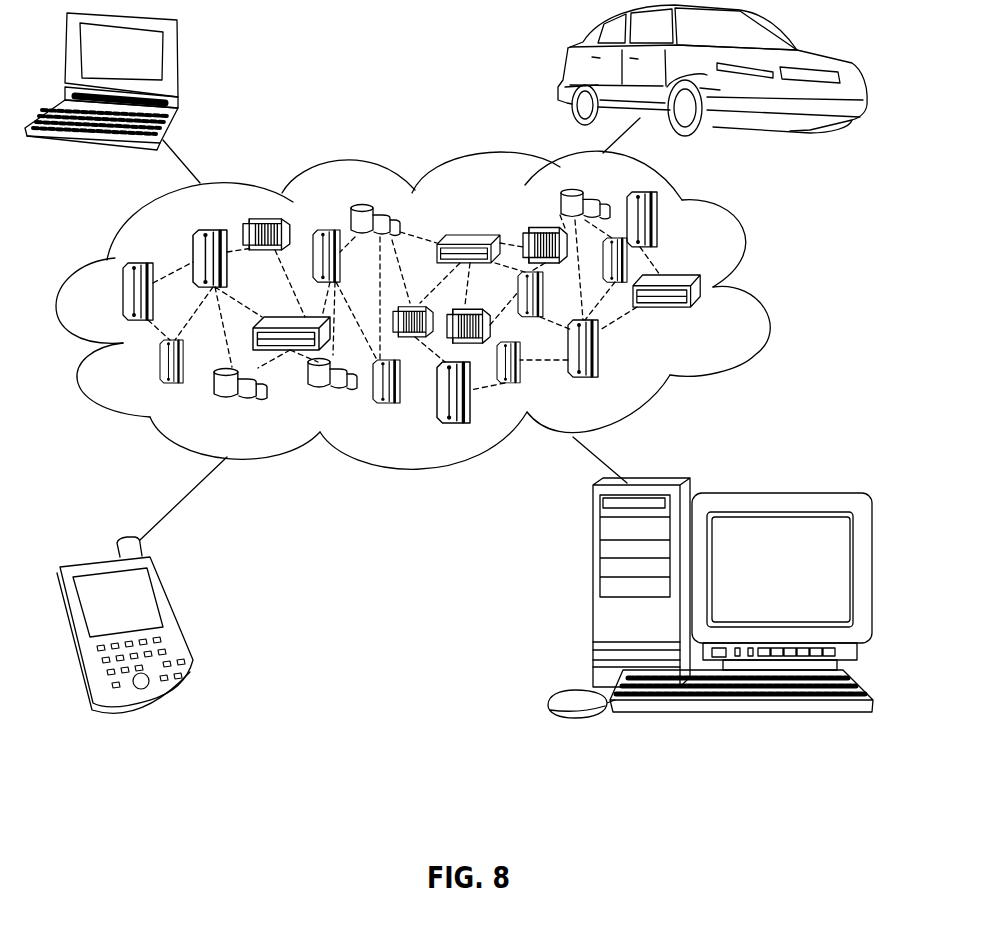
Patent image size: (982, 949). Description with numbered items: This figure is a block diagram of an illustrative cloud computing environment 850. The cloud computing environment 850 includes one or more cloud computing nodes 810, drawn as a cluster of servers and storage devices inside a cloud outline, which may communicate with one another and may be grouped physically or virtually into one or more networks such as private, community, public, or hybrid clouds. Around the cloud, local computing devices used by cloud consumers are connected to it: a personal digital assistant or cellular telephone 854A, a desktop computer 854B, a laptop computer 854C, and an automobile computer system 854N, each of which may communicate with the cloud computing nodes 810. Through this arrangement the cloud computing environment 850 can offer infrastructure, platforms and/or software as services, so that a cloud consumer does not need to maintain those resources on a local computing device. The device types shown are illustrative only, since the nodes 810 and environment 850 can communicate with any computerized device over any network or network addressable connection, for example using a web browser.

The laptop computer 854C is at (178, 60).
The automobile computer system 854N is at (562, 55).
The cloud computing environment 850 is at (747, 250).
The cloud computing nodes 810 is at (722, 313).
The personal digital assistant or cellular telephone 854A is at (173, 613).
The desktop computer 854B is at (593, 592).